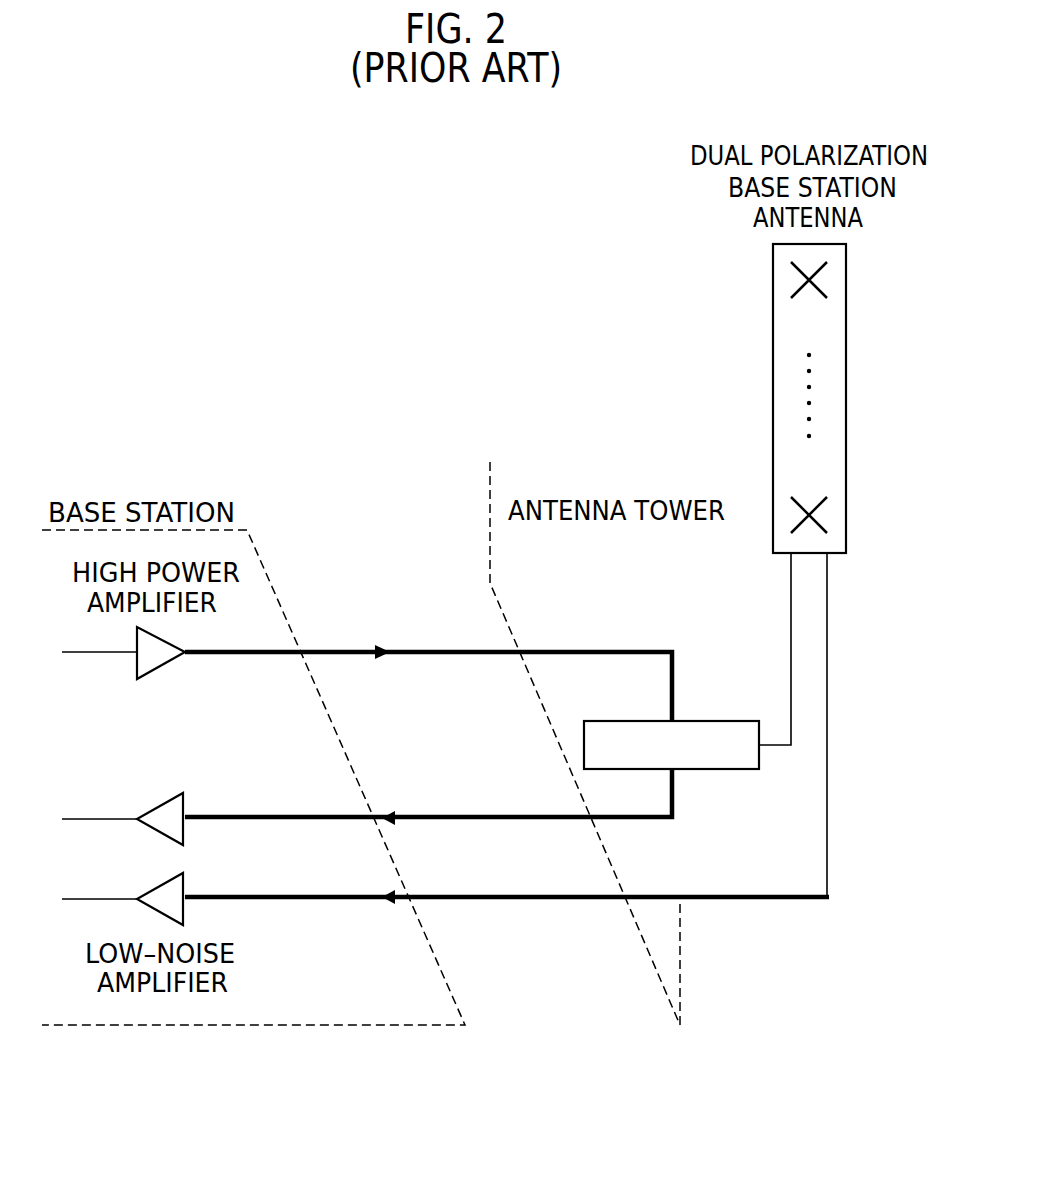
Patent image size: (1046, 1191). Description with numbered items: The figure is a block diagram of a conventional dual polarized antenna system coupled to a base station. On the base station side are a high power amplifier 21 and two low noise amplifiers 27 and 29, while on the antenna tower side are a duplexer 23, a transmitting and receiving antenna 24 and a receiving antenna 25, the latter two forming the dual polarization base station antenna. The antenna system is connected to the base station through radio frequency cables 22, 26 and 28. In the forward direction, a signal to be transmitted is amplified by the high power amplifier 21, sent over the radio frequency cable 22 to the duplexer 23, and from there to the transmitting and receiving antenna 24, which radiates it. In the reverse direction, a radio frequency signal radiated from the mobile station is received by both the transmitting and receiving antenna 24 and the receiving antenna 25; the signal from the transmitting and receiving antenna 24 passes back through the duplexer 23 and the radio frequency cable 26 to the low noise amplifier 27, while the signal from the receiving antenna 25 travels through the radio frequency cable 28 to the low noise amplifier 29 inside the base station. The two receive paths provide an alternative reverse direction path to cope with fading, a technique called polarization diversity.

The high power amplifier 21 is at (137, 667).
The radio frequency cable 22 is at (430, 651).
The duplexer 23 is at (700, 720).
The transmitting and receiving antenna 24 is at (822, 512).
The receiving antenna 25 is at (815, 524).
The radio frequency cable 26 is at (431, 817).
The low noise amplifier 27 is at (183, 812).
The radio frequency cable 28 is at (431, 897).
The low noise amplifier 29 is at (183, 892).